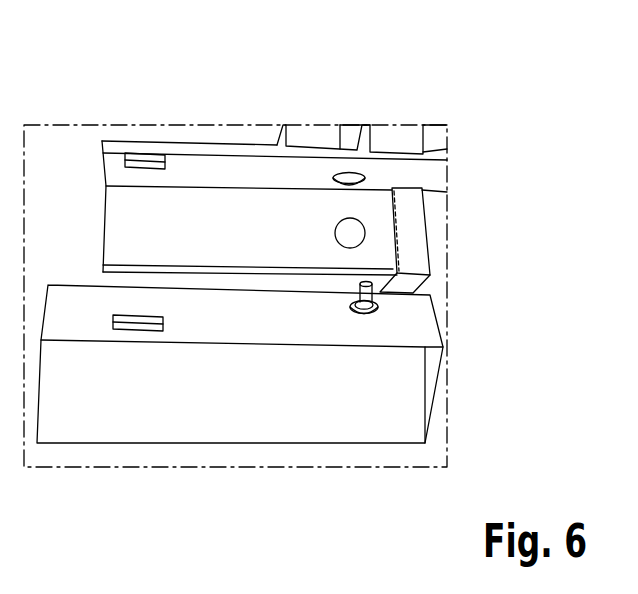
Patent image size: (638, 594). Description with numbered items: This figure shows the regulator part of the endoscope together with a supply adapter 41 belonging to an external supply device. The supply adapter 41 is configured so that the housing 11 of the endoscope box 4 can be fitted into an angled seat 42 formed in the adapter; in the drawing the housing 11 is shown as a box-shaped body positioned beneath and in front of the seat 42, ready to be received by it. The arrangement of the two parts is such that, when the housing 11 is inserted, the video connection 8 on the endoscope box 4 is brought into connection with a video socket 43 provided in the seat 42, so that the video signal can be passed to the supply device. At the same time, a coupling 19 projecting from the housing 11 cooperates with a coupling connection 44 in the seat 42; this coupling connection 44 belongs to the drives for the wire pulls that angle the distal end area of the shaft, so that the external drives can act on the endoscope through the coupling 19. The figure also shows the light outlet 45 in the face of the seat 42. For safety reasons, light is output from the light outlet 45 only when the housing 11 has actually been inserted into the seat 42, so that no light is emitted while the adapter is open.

The endoscope box 4 is at (203, 480).
The video connection 8 is at (139, 324).
The housing 11 is at (265, 407).
The coupling 19 is at (368, 314).
The supply adapter 41 is at (471, 96).
The angled seat 42 is at (248, 148).
The video socket 43 is at (145, 158).
The coupling connection 44 is at (349, 175).
The light outlet 45 is at (350, 233).